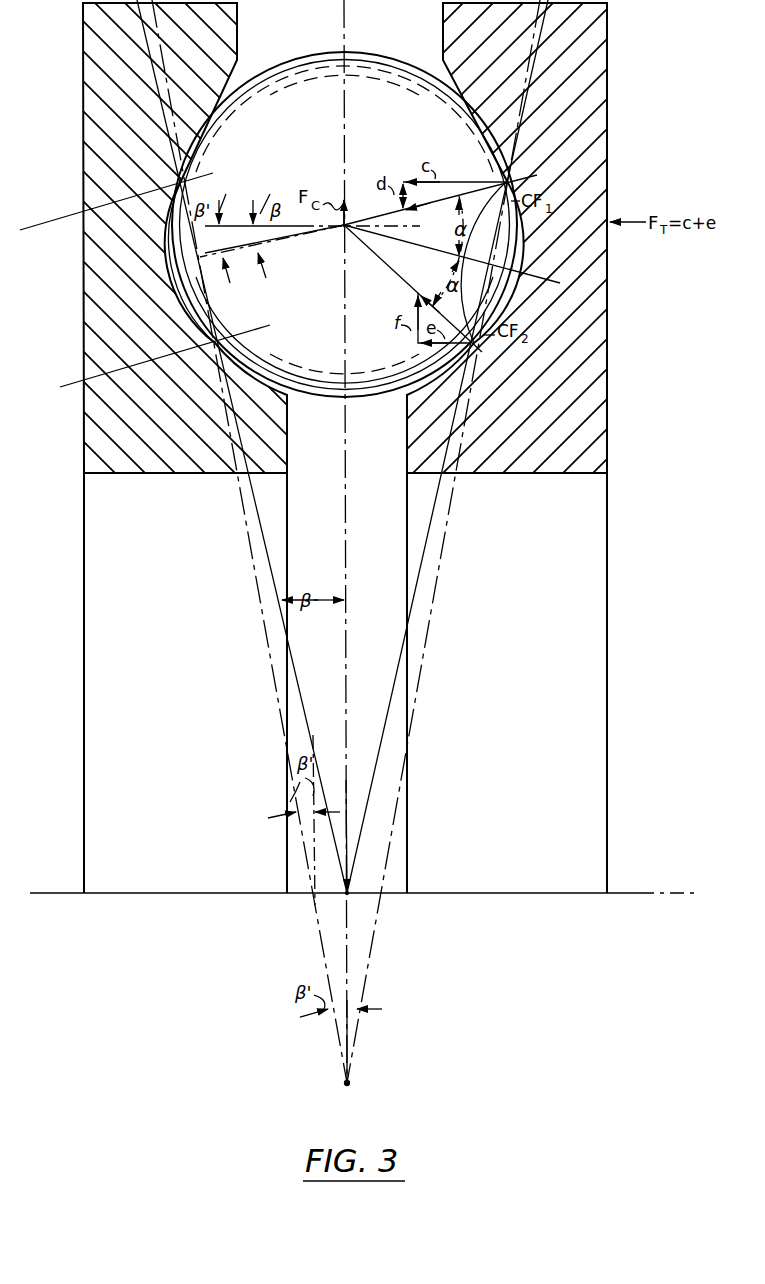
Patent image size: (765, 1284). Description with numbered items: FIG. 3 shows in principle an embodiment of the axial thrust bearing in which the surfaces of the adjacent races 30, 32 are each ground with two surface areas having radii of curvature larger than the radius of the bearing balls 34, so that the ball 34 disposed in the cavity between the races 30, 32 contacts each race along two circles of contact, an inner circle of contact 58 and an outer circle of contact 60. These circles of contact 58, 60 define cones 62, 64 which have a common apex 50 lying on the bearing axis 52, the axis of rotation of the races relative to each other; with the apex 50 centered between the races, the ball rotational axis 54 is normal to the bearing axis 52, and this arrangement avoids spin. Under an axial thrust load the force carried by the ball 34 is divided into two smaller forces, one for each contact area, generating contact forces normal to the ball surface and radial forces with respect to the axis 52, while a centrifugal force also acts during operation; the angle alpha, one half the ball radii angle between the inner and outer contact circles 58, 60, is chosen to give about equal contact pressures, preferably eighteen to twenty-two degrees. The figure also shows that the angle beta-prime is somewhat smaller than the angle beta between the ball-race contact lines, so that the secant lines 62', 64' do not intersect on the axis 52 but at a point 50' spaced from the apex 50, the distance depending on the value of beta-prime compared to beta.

The race 30 is at (80, 38).
The race 32 is at (600, 32).
The bearing ball 34 is at (317, 55).
The apex 50 is at (331, 879).
The intersection point 50' is at (370, 1080).
The bearing axis 52 is at (160, 892).
The ball rotational axis 54 is at (345, 504).
The circle of contact 58 is at (214, 344).
The circle of contact 60 is at (178, 182).
The cone 62 is at (242, 446).
The secant line 62' is at (249, 541).
The cone 64 is at (447, 446).
The secant line 64' is at (443, 541).